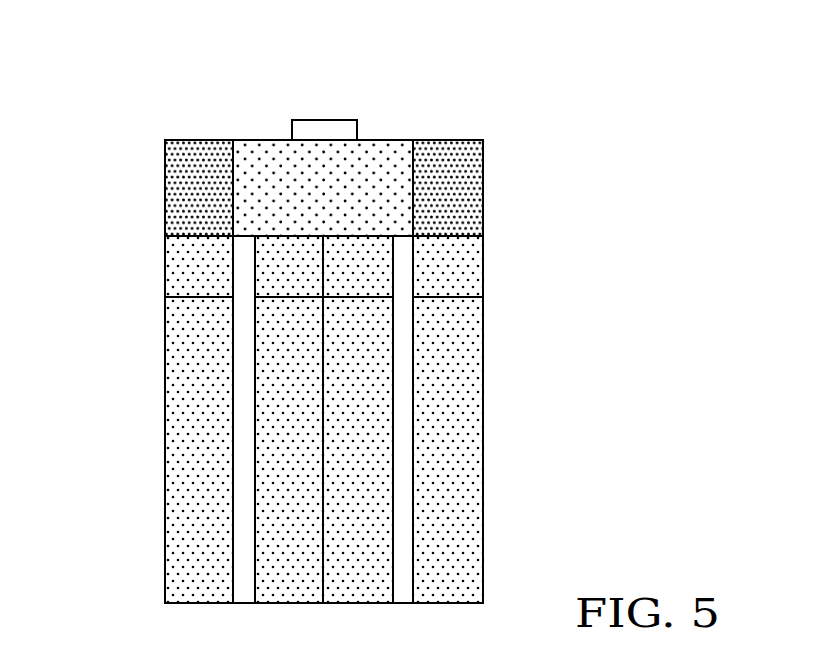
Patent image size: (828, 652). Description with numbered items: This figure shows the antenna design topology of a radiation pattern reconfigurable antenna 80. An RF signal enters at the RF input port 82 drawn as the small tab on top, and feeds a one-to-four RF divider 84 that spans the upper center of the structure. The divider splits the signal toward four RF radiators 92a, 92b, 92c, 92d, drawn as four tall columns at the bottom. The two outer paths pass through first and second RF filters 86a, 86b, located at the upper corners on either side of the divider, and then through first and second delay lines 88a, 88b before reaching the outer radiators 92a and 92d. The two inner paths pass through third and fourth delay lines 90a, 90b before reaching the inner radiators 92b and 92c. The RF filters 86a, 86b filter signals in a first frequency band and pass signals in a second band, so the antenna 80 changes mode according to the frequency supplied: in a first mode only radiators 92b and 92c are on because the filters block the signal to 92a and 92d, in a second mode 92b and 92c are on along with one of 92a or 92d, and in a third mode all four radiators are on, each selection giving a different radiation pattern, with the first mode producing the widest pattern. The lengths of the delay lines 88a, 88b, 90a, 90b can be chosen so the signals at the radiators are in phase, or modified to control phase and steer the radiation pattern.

The reconfigurable antenna 80 is at (150, 78).
The RF input port 82 is at (312, 120).
The one-to-four RF divider 84 is at (367, 152).
The first RF filter 86a is at (181, 156).
The second RF filter 86b is at (475, 155).
The first delay line 88a is at (182, 285).
The second delay line 88b is at (475, 273).
The third delay line 90a is at (272, 248).
The fourth delay line 90b is at (358, 257).
The RF radiator 92a is at (192, 463).
The RF radiator 92b is at (278, 410).
The RF radiator 92c is at (373, 407).
The RF radiator 92d is at (463, 463).